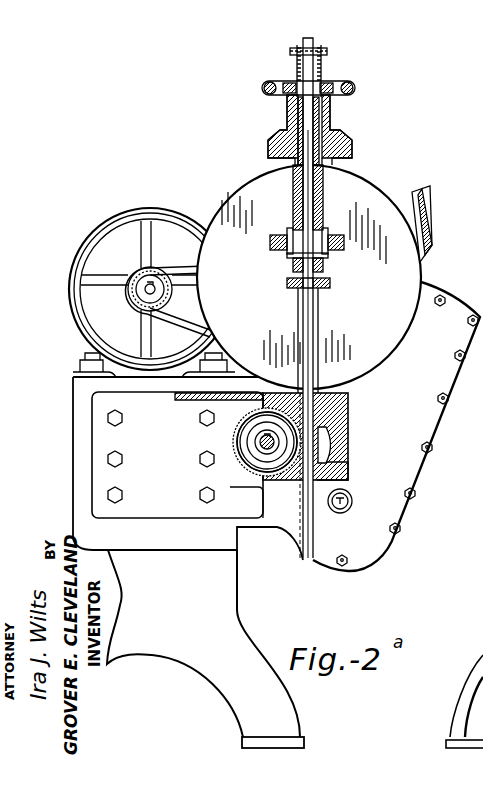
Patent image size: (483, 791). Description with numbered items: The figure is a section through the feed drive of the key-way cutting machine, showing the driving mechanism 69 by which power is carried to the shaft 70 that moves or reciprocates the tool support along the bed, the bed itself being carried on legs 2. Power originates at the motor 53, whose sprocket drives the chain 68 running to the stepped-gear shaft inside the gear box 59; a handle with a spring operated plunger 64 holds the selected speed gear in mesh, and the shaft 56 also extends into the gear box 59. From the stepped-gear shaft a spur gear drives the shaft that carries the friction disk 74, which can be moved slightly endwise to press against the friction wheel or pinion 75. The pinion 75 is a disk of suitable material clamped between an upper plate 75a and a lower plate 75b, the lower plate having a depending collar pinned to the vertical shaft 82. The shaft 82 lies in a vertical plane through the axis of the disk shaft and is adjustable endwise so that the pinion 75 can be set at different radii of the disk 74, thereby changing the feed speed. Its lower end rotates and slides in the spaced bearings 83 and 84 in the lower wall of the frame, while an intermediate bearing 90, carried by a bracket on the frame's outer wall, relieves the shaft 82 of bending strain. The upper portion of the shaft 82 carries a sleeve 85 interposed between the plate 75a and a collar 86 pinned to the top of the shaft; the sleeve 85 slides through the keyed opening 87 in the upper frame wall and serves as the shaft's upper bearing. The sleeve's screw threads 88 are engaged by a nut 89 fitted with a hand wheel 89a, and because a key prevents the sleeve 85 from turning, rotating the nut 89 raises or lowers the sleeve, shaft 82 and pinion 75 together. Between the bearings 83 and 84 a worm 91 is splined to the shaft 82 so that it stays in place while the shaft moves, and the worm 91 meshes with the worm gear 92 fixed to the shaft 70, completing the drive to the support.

The legs 2 is at (188, 562).
The motor 53 is at (150, 207).
The shaft 56 is at (353, 503).
The gear box 59 is at (396, 426).
The spring operated plunger 64 is at (431, 207).
The chain 68 is at (197, 270).
The driving mechanism 69 is at (236, 200).
The shaft 70 is at (267, 442).
The friction disk 74 is at (309, 277).
The friction wheel or pinion 75 is at (345, 247).
The plate 75a is at (330, 233).
The plate 75b is at (285, 250).
The shaft 82 is at (300, 313).
The bearing 83 is at (347, 406).
The bearing 84 is at (347, 472).
The sleeve 85 is at (322, 216).
The collar 86 is at (322, 50).
The opening 87 is at (348, 135).
The screw threads 88 is at (295, 72).
The nut 89 is at (333, 82).
The hand wheel 89a is at (352, 93).
The intermediate bearing 90 is at (326, 286).
The worm 91 is at (333, 448).
The worm gear 92 is at (258, 470).